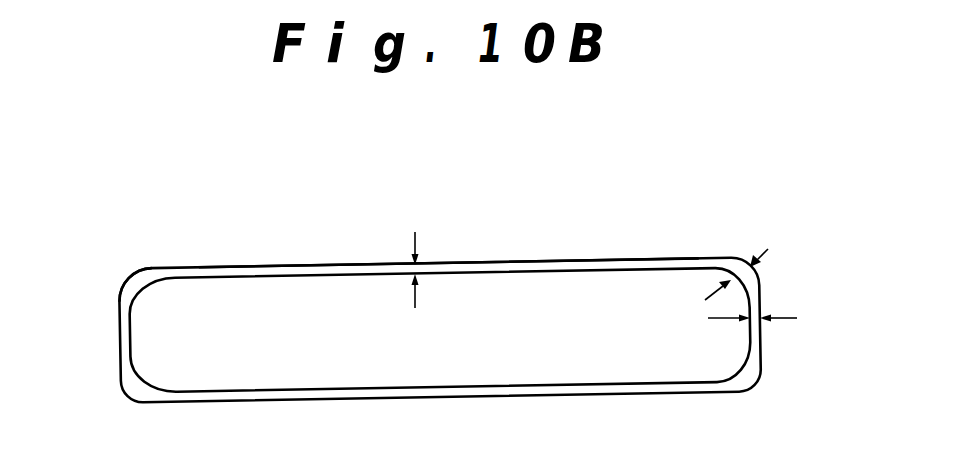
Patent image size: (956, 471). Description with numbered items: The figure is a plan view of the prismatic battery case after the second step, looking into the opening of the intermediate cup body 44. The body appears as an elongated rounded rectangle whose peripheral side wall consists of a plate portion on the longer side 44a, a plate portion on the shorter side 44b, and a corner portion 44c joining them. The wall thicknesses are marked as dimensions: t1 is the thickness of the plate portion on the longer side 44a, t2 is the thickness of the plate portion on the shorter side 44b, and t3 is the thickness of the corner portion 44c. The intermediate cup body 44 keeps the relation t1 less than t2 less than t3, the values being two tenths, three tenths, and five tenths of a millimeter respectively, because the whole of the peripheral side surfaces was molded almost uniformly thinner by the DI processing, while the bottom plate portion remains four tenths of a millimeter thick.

The intermediate cup body 44 is at (228, 268).
The plate portion on the longer side 44a is at (310, 270).
The plate portion on the shorter side 44b is at (128, 343).
The corner portion 44c is at (140, 288).
The thickness of the plate portion on the longer side t1 is at (417, 270).
The thickness of the plate portion on the shorter side t2 is at (752, 322).
The thickness of the corner portion t3 is at (730, 262).